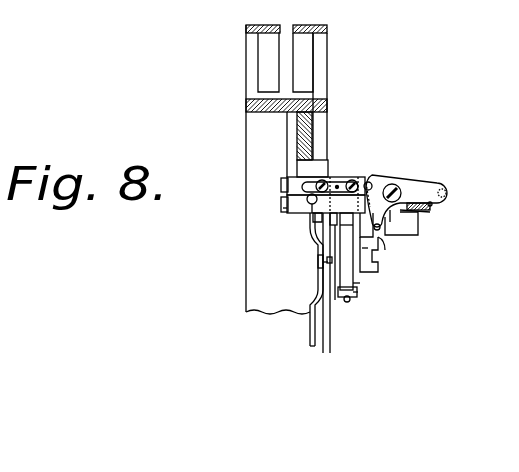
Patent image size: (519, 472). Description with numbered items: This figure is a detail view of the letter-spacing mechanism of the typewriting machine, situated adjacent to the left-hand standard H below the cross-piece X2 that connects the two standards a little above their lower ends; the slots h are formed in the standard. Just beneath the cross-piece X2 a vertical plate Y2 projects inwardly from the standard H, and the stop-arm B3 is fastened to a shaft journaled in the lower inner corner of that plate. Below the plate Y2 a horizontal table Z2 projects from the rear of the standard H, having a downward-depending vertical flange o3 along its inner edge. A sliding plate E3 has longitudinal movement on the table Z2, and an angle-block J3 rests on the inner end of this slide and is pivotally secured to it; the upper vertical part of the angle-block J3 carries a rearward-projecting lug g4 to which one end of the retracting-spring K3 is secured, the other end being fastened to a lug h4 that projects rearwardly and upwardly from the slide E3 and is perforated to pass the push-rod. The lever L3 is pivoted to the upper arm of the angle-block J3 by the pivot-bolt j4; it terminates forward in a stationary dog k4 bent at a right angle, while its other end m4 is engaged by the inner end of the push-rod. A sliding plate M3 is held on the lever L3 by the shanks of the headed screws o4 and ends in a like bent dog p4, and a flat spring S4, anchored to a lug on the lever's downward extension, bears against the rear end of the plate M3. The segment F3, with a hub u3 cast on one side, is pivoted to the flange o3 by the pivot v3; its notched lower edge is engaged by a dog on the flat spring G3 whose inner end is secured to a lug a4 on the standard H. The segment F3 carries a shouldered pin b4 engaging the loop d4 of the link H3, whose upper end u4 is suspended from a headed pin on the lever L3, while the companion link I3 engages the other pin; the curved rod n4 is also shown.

The standard H is at (246, 171).
The slots in frame h is at (288, 64).
The cross-piece X2 is at (246, 104).
The stop-arm B3 is at (286, 134).
The vertical plate Y2 is at (302, 146).
The flat spring S4 is at (366, 205).
The bent dog p4 is at (281, 187).
The headed screws o4 is at (320, 180).
The sliding plate M3 is at (353, 180).
The curved rod n4 is at (338, 184).
The angle-block J3 is at (424, 186).
The lever L3 is at (392, 184).
The other end of lever m4 is at (450, 190).
The pivot-bolt j4 is at (429, 200).
The retracting-spring K3 is at (432, 206).
The rearward-projecting lug g4 is at (425, 208).
The lug h4 is at (423, 214).
The sliding plate E3 is at (418, 234).
The horizontal plate or table Z2 is at (398, 222).
The stationary dog k4 is at (282, 209).
The upper end of link u4 is at (313, 220).
The loop d4 is at (317, 259).
The shouldered pin b4 is at (317, 266).
The link I3 is at (329, 298).
The lug a4 is at (335, 303).
The flat spring G3 is at (350, 300).
The pivot v3 is at (372, 255).
The vertical flange or web o3 is at (357, 280).
The hub u3 is at (357, 292).
The segment F3 is at (366, 268).
The link H3 is at (309, 347).